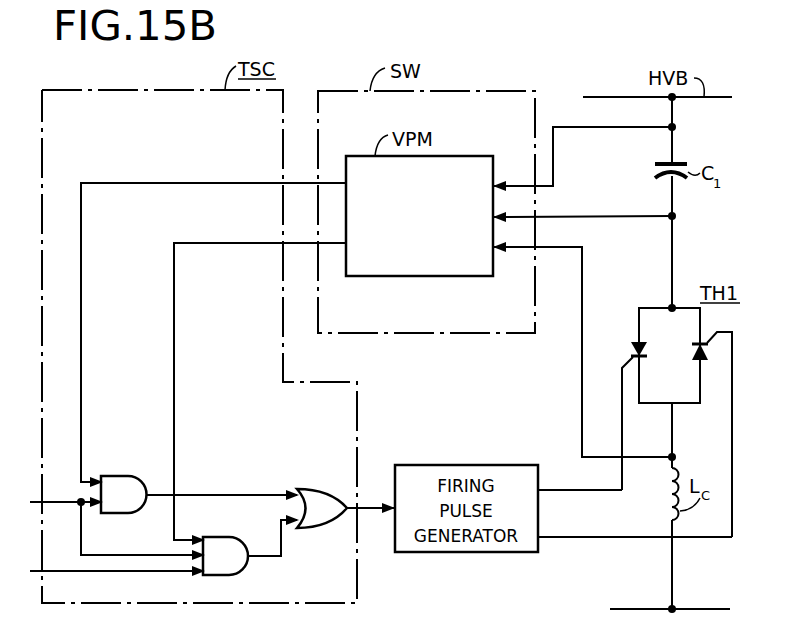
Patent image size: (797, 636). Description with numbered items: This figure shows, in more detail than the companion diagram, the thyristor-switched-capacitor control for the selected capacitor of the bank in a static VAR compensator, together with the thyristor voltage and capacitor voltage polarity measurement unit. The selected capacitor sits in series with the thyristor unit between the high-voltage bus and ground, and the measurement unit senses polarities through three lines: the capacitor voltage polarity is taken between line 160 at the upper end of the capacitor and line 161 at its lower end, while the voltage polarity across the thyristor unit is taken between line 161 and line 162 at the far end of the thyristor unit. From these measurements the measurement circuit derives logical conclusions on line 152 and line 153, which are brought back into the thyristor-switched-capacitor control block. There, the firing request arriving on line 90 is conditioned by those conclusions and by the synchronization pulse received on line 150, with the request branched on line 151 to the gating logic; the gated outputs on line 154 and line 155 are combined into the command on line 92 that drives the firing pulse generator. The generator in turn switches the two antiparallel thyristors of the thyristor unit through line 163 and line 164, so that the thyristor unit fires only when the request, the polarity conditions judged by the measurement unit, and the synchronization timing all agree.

The request line 90 is at (63, 505).
The TSC control line 92 is at (377, 502).
The synchronization pulse line 150 is at (62, 571).
The branch line from input 90 151 is at (82, 528).
The VPM logical conclusion line 152 is at (195, 245).
The VPM logical conclusion line 153 is at (193, 183).
The AND gate output line 154 is at (190, 495).
The AND gate output line 155 is at (279, 536).
The capacitor voltage sensing line 160 is at (575, 128).
The capacitor and thyristor voltage sensing line 161 is at (568, 215).
The thyristor voltage sensing line 162 is at (582, 268).
The thyristor switching line 163 is at (730, 411).
The thyristor switching line 164 is at (615, 539).